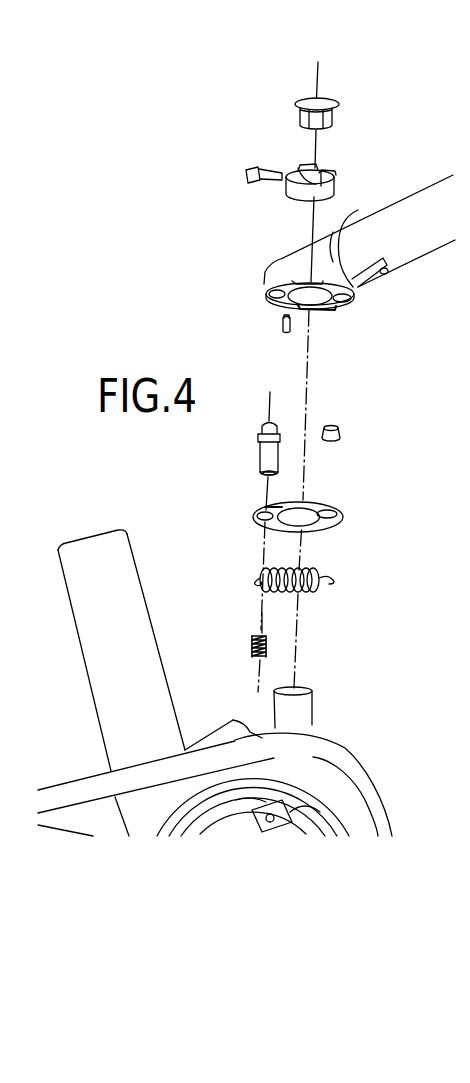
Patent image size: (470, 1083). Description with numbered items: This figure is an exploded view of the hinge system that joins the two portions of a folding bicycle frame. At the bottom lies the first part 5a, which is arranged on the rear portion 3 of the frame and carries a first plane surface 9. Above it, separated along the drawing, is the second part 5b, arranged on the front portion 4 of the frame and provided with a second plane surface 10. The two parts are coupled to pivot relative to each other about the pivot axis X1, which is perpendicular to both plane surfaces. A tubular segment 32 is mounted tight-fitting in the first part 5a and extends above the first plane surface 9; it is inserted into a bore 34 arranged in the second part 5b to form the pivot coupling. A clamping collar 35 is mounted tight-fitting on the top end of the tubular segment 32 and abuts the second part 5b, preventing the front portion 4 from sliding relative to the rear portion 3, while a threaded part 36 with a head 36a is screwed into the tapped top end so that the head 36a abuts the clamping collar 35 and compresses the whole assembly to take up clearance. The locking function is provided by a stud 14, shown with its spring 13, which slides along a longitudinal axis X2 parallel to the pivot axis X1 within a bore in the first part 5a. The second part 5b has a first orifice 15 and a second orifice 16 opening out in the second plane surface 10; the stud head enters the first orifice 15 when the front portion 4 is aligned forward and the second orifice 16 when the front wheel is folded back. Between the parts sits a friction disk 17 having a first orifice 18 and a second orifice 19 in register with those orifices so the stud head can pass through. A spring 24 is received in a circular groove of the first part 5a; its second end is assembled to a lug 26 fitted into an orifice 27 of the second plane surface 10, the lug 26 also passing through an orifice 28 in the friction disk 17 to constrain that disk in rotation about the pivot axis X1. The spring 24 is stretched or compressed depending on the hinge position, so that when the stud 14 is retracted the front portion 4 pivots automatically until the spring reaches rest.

The rear portion 3 is at (124, 543).
The front portion 4 is at (438, 189).
The first part 5a is at (332, 748).
The second part 5b is at (329, 243).
The first plane surface 9 is at (329, 726).
The second plane surface 10 is at (354, 296).
The spring 13 is at (252, 643).
The stud 14 is at (262, 455).
The first orifice 15 is at (270, 300).
The second orifice 16 is at (341, 302).
The friction disk 17 is at (324, 528).
The first orifice 18 is at (265, 519).
The second orifice 19 is at (333, 511).
The spring 24 is at (305, 590).
The lug 26 is at (284, 327).
The orifice 27 is at (280, 286).
The orifice 28 is at (278, 507).
The tubular segment 32 is at (313, 702).
The bore 34 is at (318, 304).
The clamping collar 35 is at (290, 177).
The threaded part 36 is at (331, 114).
The head 36a is at (306, 100).
The pivot axis X1 is at (319, 68).
The longitudinal axis X2 is at (270, 396).